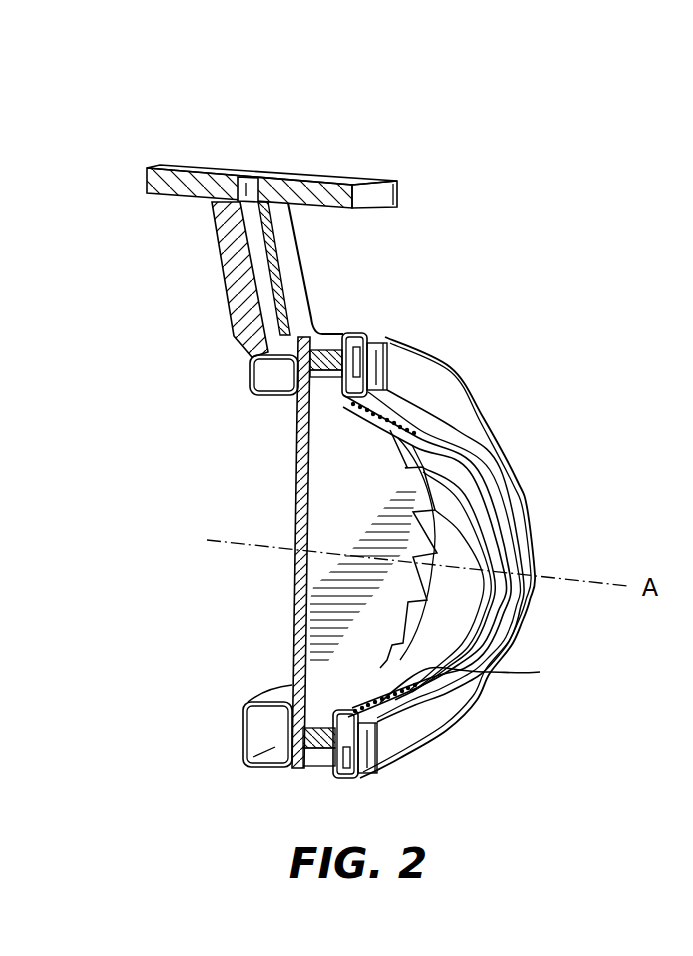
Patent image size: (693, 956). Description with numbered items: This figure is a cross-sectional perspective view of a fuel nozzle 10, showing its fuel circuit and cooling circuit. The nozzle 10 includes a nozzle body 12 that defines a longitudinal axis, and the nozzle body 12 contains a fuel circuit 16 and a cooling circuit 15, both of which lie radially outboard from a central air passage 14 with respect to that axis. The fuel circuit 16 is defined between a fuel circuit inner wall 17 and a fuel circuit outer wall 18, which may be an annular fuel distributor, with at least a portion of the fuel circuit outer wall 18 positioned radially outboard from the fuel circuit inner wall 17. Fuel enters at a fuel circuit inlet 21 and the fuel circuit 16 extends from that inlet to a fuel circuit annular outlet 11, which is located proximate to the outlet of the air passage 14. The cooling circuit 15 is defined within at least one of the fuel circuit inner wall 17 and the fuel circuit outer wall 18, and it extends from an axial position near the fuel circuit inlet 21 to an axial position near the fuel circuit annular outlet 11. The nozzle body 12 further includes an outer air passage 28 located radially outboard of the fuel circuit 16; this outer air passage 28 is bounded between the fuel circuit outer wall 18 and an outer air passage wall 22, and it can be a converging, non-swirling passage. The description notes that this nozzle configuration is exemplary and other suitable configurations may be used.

The nozzle 10 is at (165, 463).
The fuel circuit annular outlet 11 is at (488, 638).
The nozzle body 12 is at (464, 360).
The air passage 14 is at (552, 488).
The cooling circuit 15 is at (405, 705).
The fuel circuit 16 is at (390, 702).
The fuel circuit inner wall 17 is at (540, 672).
The fuel circuit outer wall 18 is at (445, 685).
The fuel circuit inlet 21 is at (245, 158).
The outer air passage wall 22 is at (417, 367).
The outer air passage 28 is at (378, 346).